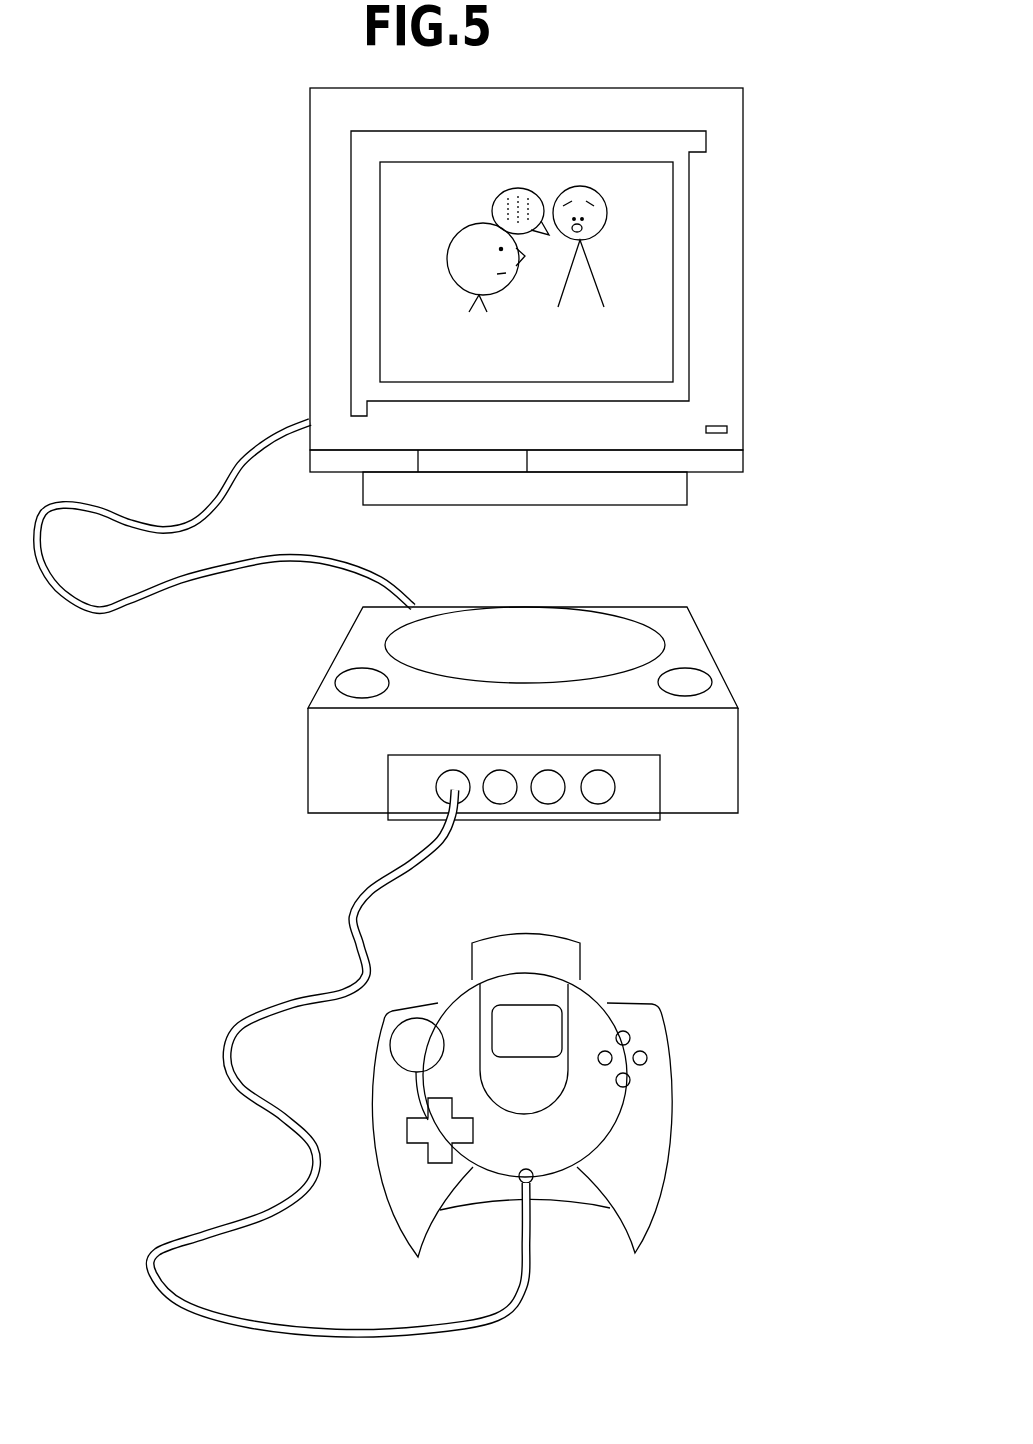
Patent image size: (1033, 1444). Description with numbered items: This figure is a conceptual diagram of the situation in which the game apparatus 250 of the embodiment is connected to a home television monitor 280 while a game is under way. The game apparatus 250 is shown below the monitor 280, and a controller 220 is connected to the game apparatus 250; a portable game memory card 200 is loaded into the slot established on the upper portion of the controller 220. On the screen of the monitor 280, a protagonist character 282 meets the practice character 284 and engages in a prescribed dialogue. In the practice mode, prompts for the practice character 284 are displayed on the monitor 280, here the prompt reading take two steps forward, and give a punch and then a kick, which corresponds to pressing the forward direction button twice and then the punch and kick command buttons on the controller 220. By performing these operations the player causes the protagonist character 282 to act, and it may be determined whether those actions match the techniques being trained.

The home television monitor 280 is at (743, 343).
The protagonist character 282 is at (448, 258).
The practice character 284 is at (610, 218).
The game apparatus 250 is at (730, 671).
The portable game memory card 200 is at (584, 946).
The controller 220 is at (669, 1021).